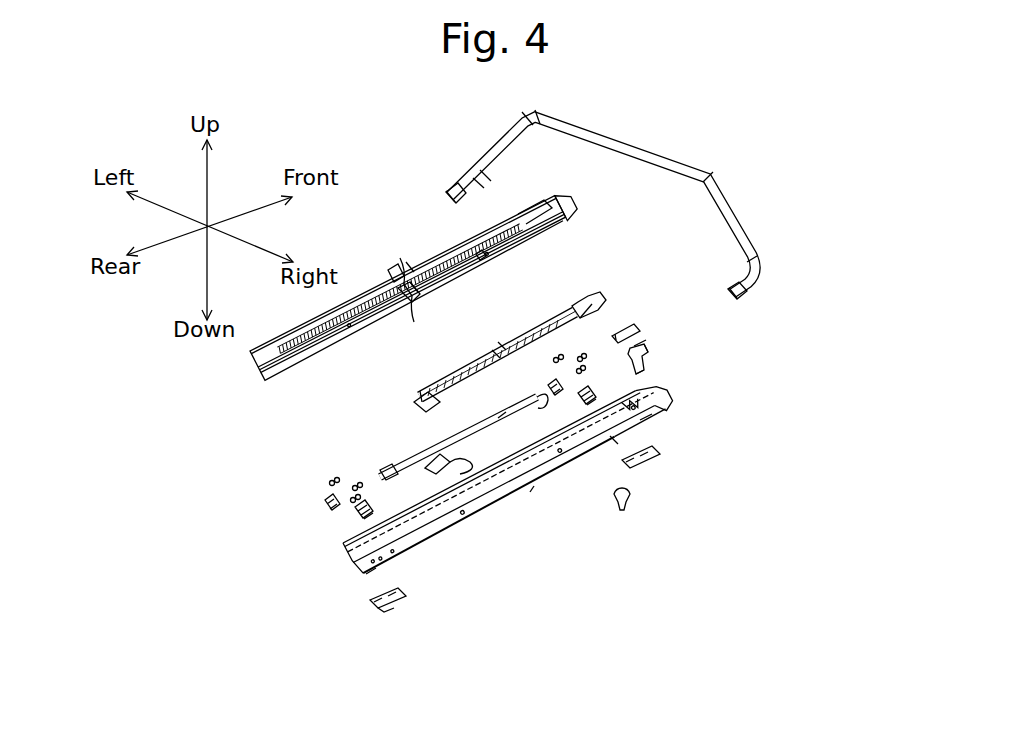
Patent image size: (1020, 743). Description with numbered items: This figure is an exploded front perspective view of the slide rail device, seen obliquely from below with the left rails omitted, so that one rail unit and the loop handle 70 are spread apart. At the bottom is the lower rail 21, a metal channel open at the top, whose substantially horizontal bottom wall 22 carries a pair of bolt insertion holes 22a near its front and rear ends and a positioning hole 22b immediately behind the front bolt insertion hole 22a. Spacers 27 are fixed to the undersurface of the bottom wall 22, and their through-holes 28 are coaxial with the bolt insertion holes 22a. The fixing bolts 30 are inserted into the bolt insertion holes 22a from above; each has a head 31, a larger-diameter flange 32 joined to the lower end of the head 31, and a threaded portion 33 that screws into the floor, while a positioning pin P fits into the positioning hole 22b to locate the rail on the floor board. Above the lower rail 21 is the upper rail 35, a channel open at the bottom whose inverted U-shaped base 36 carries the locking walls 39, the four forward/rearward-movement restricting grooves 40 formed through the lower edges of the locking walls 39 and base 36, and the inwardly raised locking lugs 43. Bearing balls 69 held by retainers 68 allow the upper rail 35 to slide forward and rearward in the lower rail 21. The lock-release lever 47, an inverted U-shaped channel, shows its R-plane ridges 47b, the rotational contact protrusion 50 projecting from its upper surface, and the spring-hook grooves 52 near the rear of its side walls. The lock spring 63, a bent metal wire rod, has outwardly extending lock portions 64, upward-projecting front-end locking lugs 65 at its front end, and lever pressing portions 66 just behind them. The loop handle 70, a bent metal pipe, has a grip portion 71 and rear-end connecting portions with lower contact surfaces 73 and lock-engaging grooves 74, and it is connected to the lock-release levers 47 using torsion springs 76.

The lower rail 21 is at (551, 472).
The bottom wall 22 is at (533, 490).
The bolt insertion holes 22a is at (648, 426).
The positioning hole 22b is at (613, 440).
The spacers 27 is at (404, 596).
The through-holes 28 is at (660, 458).
The fixing bolts 30 is at (648, 362).
The head 31 is at (643, 346).
The flange 32 is at (648, 350).
The threaded portion 33 is at (655, 376).
The upper rail 35 is at (455, 246).
The base 36 is at (290, 334).
The locking walls 39 is at (388, 272).
The forward/rearward-movement restricting grooves 40 is at (400, 276).
The locking lugs 43 is at (482, 258).
The lock-release lever 47 is at (452, 378).
The ridges 47b is at (508, 330).
The rotational contact protrusion 50 is at (487, 346).
The spring-hook grooves 52 is at (414, 410).
The lock spring 63 is at (380, 470).
The lock portions 64 is at (418, 462).
The front-end locking lugs 65 is at (534, 396).
The lever pressing portions 66 is at (502, 414).
The retainers 68 is at (552, 394).
The bearing balls 69 is at (578, 348).
The loop handle 70 is at (693, 175).
The grip portion 71 is at (636, 148).
The lower contact surfaces 73 is at (452, 192).
The lock-engaging grooves 74 is at (482, 185).
The torsion springs 76 is at (630, 332).
The positioning pins P is at (628, 512).